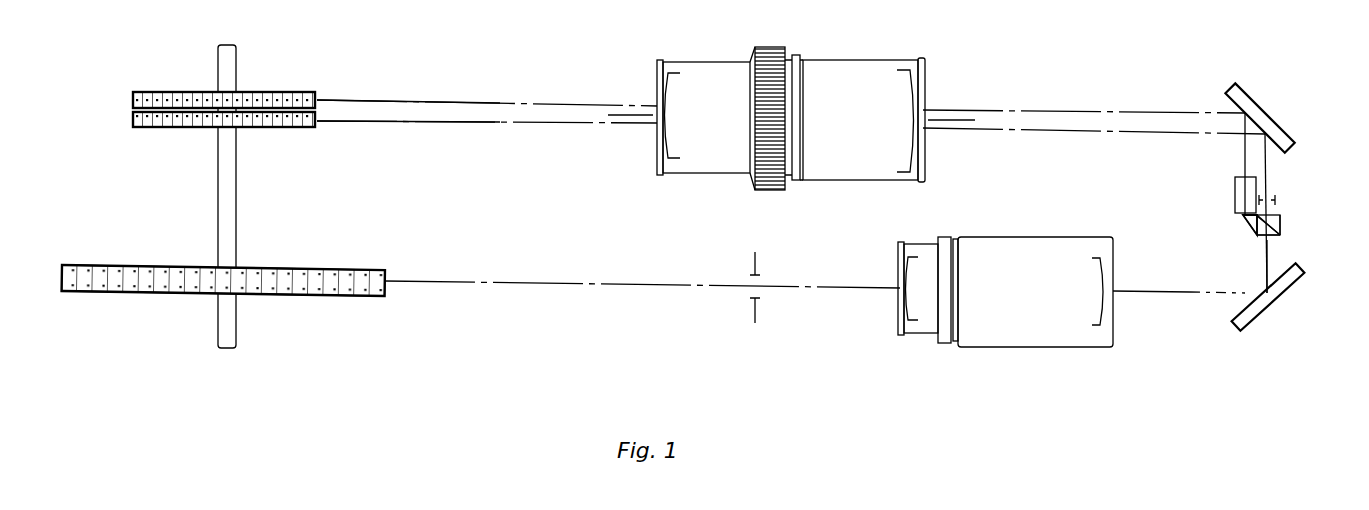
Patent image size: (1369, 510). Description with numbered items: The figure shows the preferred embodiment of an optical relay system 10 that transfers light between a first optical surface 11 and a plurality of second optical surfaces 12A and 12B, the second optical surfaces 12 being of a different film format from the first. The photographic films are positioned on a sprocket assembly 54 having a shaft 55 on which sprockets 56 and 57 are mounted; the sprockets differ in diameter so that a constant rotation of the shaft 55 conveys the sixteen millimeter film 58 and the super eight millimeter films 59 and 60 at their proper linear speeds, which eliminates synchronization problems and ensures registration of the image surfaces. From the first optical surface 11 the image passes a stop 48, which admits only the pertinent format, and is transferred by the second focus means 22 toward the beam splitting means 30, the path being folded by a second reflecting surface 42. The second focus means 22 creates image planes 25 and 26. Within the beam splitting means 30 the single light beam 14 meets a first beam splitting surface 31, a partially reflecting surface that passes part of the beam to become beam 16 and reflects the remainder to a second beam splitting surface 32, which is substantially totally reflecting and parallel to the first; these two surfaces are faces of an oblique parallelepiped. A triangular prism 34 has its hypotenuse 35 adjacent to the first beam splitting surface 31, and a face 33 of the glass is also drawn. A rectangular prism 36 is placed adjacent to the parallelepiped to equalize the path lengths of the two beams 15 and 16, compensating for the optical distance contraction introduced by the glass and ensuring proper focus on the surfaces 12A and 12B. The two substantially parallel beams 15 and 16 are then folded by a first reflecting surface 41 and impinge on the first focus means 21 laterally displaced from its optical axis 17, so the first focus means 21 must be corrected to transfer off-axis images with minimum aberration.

The optical relay system 10 is at (865, 230).
The first optical surface 11 is at (388, 292).
The second optical surfaces 12 is at (366, 125).
The second optical surface 12A is at (318, 100).
The second optical surface 12B is at (318, 122).
The single light beam 14 is at (1268, 265).
The light beam 15 is at (490, 103).
The light beam 16 is at (497, 125).
The optical axis 17 is at (943, 120).
The first focus means 21 is at (840, 60).
The second focus means 22 is at (1025, 348).
The image plane 25 is at (1270, 200).
The image plane 26 is at (1242, 220).
The beam splitting means 30 is at (1213, 209).
The first beam splitting surface 31 is at (1282, 225).
The second beam splitting surface 32 is at (1240, 236).
The bottom face 33 is at (1280, 237).
The triangular prism 34 is at (1262, 215).
The hypotenuse 35 is at (1272, 222).
The rectangular prism 36 is at (1234, 187).
The first reflecting surface 41 is at (1232, 100).
The second reflecting surface 42 is at (1262, 294).
The stop 48 is at (750, 275).
The sprocket assembly 54 is at (286, 183).
The shaft 55 is at (236, 205).
The sprocket 56 is at (290, 293).
The sprocket 57 is at (278, 92).
The 16 mm film 58 is at (243, 275).
The super 8 mm film 59 is at (240, 102).
The super 8 mm film 60 is at (211, 128).